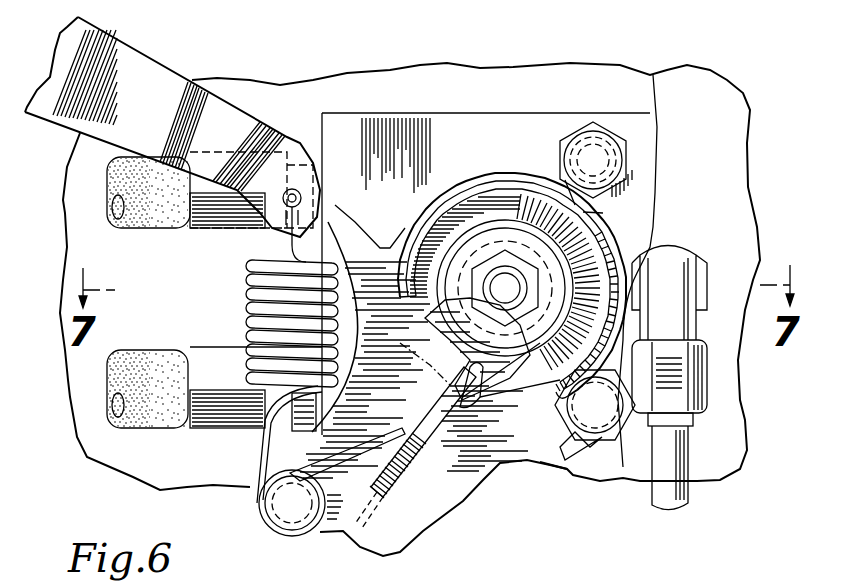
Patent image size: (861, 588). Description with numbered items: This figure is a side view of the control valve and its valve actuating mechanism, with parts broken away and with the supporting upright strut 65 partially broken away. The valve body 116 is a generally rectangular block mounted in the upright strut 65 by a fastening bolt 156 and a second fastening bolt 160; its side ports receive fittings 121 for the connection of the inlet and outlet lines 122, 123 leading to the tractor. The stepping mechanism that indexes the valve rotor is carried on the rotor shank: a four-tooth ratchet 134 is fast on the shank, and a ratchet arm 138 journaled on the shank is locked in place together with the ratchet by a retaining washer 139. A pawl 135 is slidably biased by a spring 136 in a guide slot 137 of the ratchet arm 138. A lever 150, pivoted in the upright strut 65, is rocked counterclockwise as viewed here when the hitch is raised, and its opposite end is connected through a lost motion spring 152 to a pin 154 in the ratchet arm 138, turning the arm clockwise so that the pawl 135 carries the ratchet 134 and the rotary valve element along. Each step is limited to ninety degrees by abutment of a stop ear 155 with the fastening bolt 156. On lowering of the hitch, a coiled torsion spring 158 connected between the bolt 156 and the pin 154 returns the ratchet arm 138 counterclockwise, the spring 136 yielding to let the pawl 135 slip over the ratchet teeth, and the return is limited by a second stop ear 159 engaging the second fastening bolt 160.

The upright strut 65 is at (328, 90).
The valve body 116 is at (467, 130).
The fittings 121 is at (217, 215).
The inlet line 122 is at (140, 225).
The outlet line 123 is at (152, 425).
The four-tooth ratchet 134 is at (415, 350).
The pawl 135 is at (445, 385).
The spring 136 is at (390, 468).
The guide slot 137 is at (472, 392).
The ratchet arm 138 is at (430, 515).
The retaining washer 139 is at (512, 218).
The lever 150 is at (167, 78).
The lost motion spring 152 is at (250, 305).
The pin 154 is at (270, 518).
The stop ear 155 is at (352, 242).
The fastening bolt 156 is at (607, 150).
The coiled torsion spring 158 is at (458, 205).
The second stop ear 159 is at (580, 455).
The second fastening bolt 160 is at (607, 425).